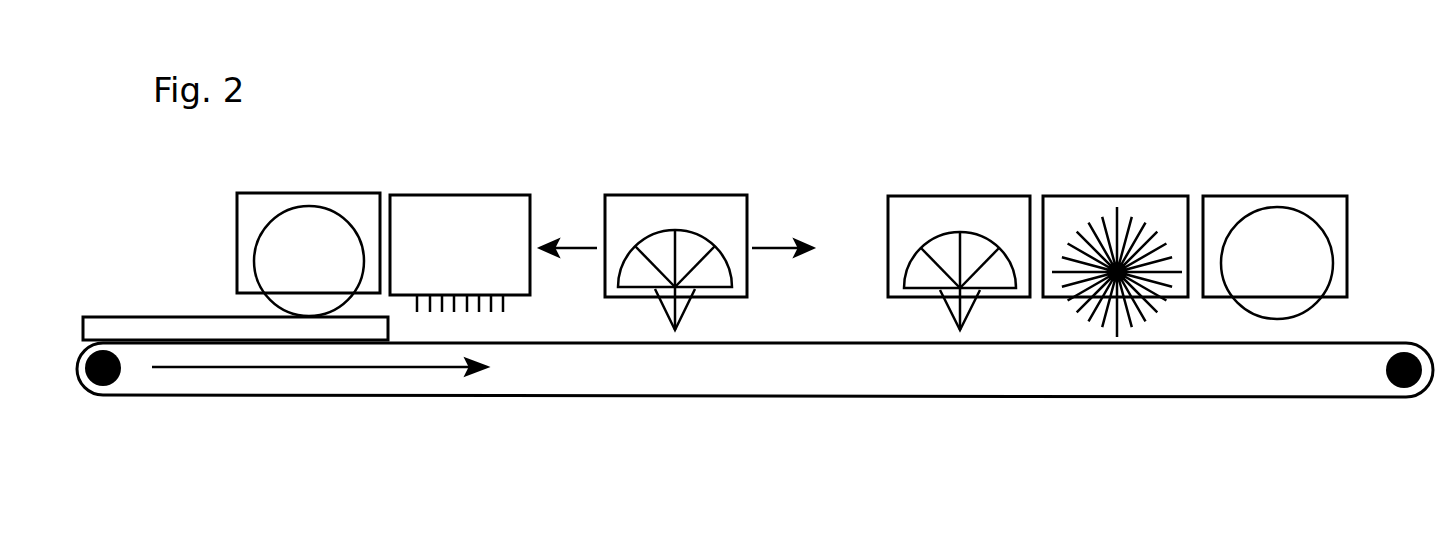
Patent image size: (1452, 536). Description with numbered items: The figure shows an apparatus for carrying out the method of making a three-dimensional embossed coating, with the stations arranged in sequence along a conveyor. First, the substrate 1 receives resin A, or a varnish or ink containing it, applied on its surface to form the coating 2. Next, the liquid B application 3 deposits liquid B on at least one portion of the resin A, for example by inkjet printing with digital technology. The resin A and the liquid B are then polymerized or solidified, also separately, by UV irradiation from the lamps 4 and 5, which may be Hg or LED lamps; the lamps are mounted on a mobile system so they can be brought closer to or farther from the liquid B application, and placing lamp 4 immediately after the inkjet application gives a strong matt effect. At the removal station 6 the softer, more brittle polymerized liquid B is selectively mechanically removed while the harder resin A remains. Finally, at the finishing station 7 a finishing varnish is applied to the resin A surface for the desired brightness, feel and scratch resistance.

The substrate 1 is at (235, 292).
The coating 2 is at (308, 228).
The liquid B application (inkjet printing) 3 is at (460, 226).
The polymerization lamp (UV irradiation) 4 is at (676, 235).
The polymerization lamp (UV irradiation) 5 is at (959, 235).
The removal of polymerized liquid B 6 is at (1115, 238).
The finishing varnish application 7 is at (1275, 229).